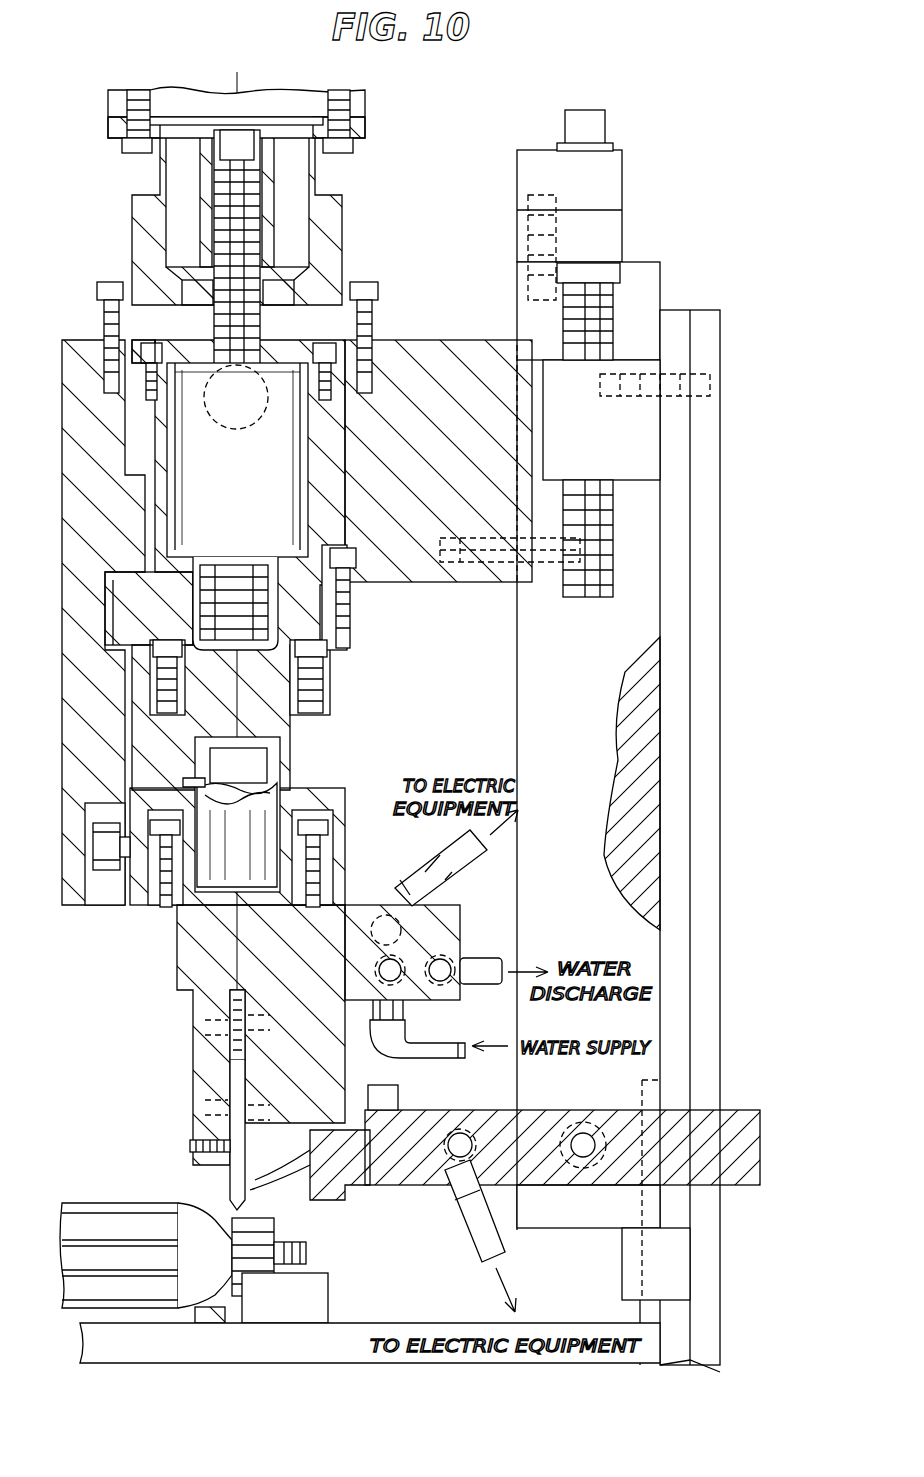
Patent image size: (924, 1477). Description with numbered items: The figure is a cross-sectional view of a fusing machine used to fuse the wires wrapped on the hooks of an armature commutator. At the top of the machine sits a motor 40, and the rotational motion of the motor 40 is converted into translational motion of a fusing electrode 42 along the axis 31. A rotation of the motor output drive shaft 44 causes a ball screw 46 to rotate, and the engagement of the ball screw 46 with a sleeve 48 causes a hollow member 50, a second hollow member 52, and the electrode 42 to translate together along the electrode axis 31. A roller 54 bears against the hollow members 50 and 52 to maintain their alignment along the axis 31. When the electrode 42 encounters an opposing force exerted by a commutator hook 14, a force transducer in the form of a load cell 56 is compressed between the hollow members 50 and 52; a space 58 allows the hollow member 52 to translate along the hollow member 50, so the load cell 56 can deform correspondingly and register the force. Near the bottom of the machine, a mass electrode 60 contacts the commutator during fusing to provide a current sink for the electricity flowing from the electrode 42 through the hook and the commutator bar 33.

The commutator hook 14 is at (212, 1212).
The axis 31 is at (240, 1072).
The commutator bar 33 is at (275, 1300).
The motor 40 is at (400, 107).
The fusing electrode 42 is at (231, 1192).
The motor output drive shaft 44 is at (262, 150).
The ball screw 46 is at (215, 337).
The sleeve 48 is at (175, 490).
The hollow member 50 is at (197, 583).
The hollow member 52 is at (190, 927).
The roller 54 is at (110, 872).
The load cell 56 is at (258, 757).
The space 58 is at (170, 680).
The mass electrode 60 is at (295, 1188).